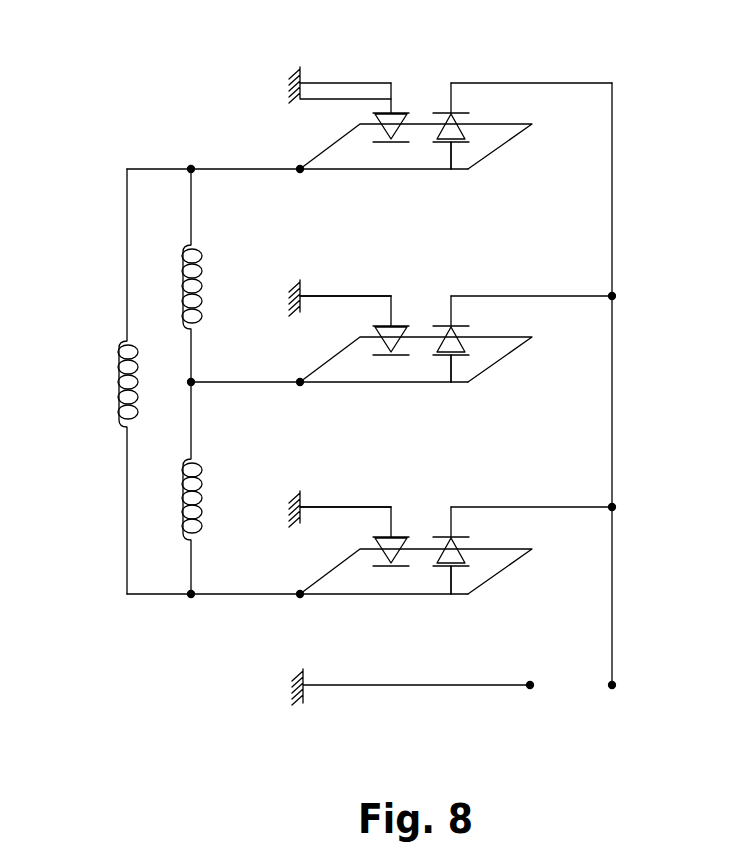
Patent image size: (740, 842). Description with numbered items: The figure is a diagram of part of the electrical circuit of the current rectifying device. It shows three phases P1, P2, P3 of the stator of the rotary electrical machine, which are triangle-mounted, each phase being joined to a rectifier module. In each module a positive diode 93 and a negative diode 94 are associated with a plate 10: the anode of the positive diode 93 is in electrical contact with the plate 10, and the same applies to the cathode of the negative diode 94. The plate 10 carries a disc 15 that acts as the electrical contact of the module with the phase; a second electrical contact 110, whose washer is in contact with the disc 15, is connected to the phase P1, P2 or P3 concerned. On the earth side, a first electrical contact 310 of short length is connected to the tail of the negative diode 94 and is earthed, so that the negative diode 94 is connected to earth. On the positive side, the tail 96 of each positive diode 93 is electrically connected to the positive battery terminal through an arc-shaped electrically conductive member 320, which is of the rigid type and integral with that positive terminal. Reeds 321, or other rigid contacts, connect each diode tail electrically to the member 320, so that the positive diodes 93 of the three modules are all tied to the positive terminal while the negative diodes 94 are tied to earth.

The plate 10 is at (469, 150).
The disc 15 is at (300, 169).
The positive diode 93 is at (434, 139).
The negative diode 94 is at (396, 112).
The tail of the positive diode 96 is at (440, 100).
The second electrical contact 110 is at (212, 168).
The first electrical contact 310 is at (337, 82).
The arc-shaped electrically conductive member 320 is at (620, 198).
The reeds 321 is at (528, 82).
The phase P1 is at (120, 383).
The phase P2 is at (203, 520).
The phase P3 is at (206, 276).